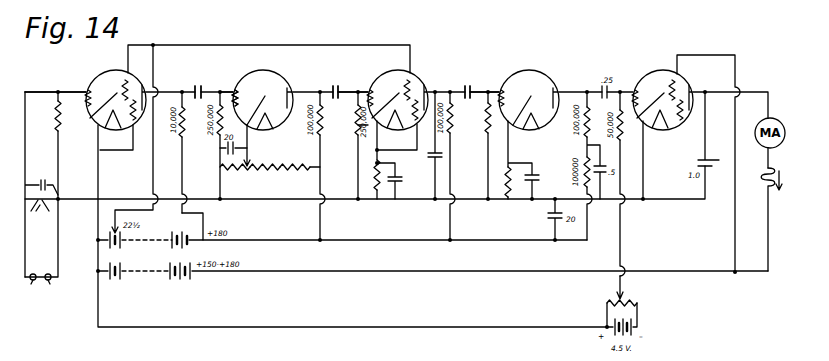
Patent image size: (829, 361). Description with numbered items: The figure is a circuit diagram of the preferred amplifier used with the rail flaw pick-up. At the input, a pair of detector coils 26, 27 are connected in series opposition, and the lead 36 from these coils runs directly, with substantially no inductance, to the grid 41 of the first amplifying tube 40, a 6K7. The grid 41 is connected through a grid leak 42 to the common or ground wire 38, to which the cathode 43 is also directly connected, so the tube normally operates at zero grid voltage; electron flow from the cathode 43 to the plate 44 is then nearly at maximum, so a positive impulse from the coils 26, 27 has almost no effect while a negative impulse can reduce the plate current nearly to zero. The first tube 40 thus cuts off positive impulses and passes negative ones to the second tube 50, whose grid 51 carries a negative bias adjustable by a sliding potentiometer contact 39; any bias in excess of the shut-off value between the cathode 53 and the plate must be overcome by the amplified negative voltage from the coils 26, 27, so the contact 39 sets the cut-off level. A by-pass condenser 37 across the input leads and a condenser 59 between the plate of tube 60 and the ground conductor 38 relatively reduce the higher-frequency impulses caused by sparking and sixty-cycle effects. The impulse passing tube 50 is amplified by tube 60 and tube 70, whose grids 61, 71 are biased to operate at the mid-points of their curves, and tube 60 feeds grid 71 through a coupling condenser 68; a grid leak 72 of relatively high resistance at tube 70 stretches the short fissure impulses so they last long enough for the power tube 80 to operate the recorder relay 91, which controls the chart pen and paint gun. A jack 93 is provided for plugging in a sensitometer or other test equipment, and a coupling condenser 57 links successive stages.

The coil 26 is at (34, 284).
The coil 27 is at (50, 284).
The lead 36 is at (26, 169).
The by-pass condenser 37 is at (61, 201).
The ground wire 38 is at (78, 197).
The sliding potentiometer contact 39 is at (249, 162).
The first amplifying tube 40 is at (100, 78).
The grid 41 is at (84, 82).
The grid leak 42 is at (56, 124).
The cathode 43 is at (63, 125).
The plate 44 is at (158, 86).
The second tube 50 is at (278, 87).
The grid 51 is at (234, 88).
The cathode 53 is at (251, 86).
The coupling capacitor 57 is at (336, 85).
The by-pass condenser 59 is at (442, 159).
The tube 60 is at (412, 76).
The grid 61 is at (376, 86).
The coupling condenser 68 is at (463, 89).
The tube 70 is at (549, 86).
The grid 71 is at (509, 85).
The grid leak 72 is at (487, 133).
The power tube 80 is at (642, 81).
The relay 91 is at (763, 189).
The jack 93 is at (42, 210).